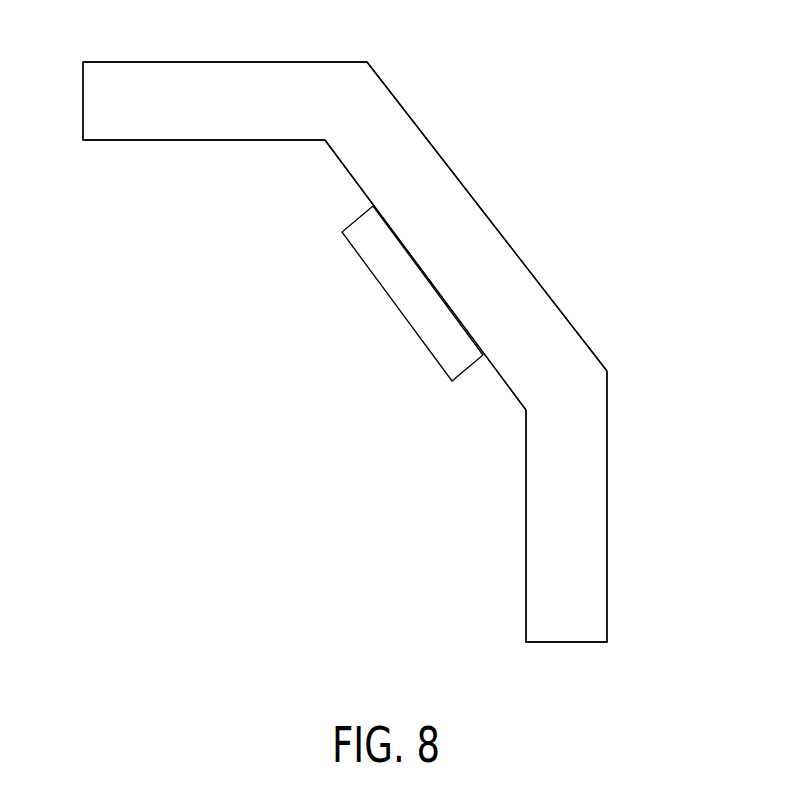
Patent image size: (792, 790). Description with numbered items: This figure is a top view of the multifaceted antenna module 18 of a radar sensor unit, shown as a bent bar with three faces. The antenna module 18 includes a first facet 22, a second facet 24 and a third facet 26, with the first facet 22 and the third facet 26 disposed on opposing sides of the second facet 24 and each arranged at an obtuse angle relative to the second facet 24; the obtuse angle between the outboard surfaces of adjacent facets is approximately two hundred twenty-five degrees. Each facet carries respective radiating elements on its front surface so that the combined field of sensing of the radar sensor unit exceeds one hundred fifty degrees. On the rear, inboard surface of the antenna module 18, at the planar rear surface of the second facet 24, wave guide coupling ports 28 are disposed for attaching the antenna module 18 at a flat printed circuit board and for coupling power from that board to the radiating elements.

The antenna module 18 is at (700, 185).
The first facet 22 is at (152, 82).
The second facet 24 is at (392, 117).
The third facet 26 is at (593, 433).
The wave guide coupling ports 28 is at (412, 303).